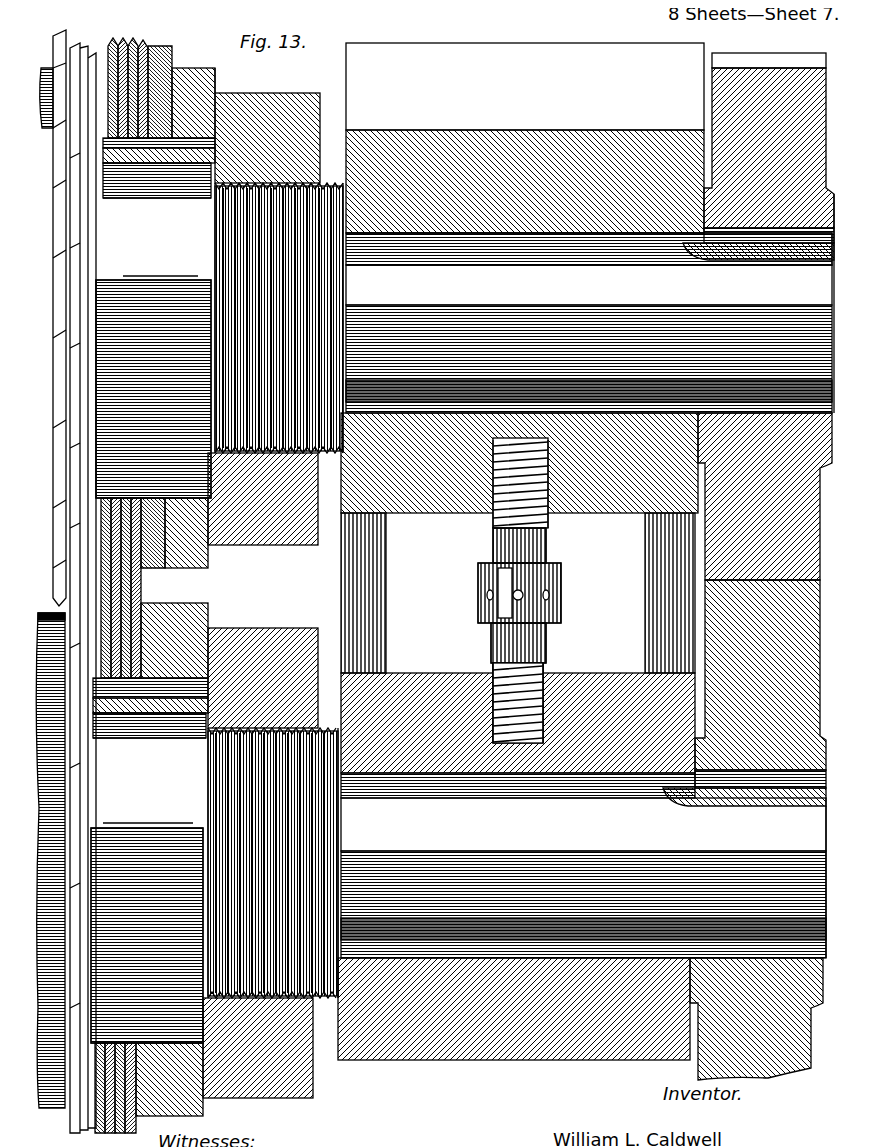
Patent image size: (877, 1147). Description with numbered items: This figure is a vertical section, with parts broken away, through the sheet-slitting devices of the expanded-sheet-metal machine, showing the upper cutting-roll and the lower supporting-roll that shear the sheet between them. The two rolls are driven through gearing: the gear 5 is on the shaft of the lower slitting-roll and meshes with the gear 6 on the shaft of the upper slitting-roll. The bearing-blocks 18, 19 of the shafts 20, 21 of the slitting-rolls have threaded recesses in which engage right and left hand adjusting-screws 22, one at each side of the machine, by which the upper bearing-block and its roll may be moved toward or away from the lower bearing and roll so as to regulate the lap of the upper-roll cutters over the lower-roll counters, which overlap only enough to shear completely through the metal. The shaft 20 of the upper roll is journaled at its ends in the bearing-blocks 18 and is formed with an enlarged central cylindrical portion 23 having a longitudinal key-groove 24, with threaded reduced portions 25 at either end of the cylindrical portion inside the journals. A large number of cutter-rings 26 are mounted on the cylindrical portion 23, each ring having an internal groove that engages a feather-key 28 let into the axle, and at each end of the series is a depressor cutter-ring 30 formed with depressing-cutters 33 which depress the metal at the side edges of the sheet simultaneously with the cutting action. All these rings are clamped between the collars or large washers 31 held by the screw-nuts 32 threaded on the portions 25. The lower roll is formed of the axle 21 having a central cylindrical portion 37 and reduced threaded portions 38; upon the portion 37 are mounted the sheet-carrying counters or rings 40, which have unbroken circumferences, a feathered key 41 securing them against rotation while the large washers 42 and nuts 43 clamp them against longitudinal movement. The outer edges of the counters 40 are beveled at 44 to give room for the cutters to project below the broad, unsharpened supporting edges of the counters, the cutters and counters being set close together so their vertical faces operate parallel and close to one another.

The gear 5 is at (812, 664).
The gear 6 is at (815, 138).
The bearing-block 18 is at (428, 487).
The bearing-block 19 is at (414, 668).
The shaft or axle of the upper roll 20 is at (589, 339).
The axle of the lower roll 21 is at (582, 916).
The adjusting-screws 22 is at (538, 603).
The enlarged central cylindrical portion 23 is at (153, 330).
The longitudinal key-groove 24 is at (176, 135).
The threaded reduced portions 25 is at (318, 291).
The cutter-rings 26 is at (107, 38).
The feather-key 28 is at (157, 135).
The depressor cutter-rings 30 is at (168, 46).
The collars or large washers 31 is at (209, 70).
The screw-nuts 32 is at (278, 88).
The depressing-cutters 33 is at (145, 38).
The central cylindrical portion 37 is at (148, 878).
The reduced threaded portions 38 is at (210, 787).
The sheet-carrying counters or rings 40 is at (117, 668).
The feathered key 41 is at (173, 682).
The large washers 42 is at (196, 605).
The nuts 43 is at (260, 624).
The bevel 44 is at (118, 592).